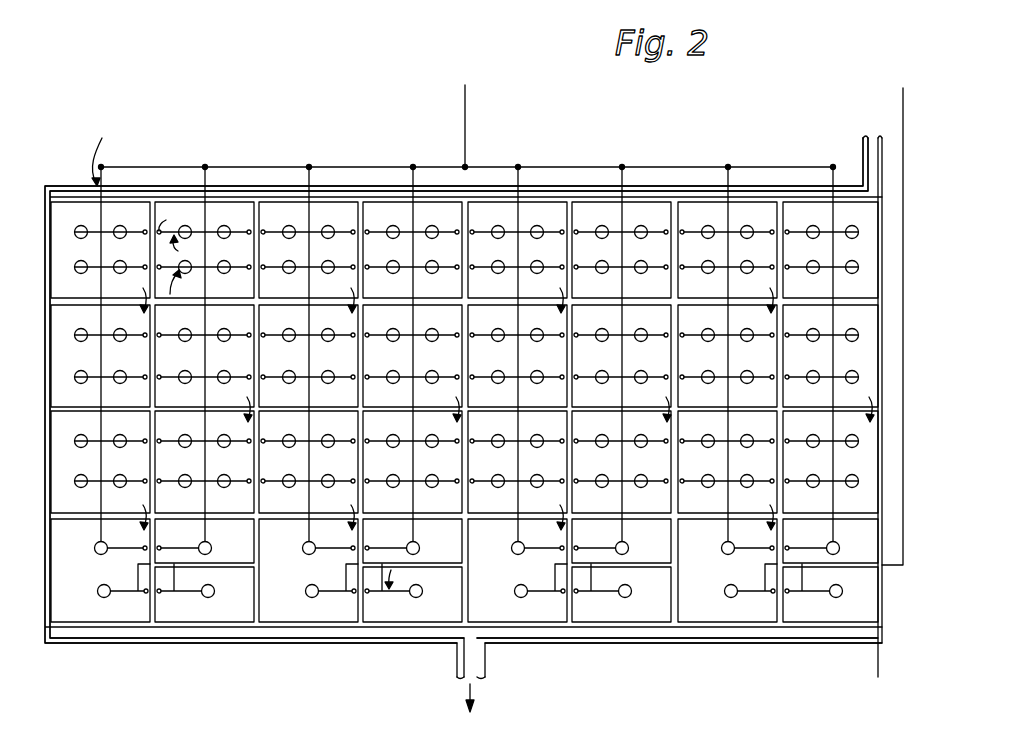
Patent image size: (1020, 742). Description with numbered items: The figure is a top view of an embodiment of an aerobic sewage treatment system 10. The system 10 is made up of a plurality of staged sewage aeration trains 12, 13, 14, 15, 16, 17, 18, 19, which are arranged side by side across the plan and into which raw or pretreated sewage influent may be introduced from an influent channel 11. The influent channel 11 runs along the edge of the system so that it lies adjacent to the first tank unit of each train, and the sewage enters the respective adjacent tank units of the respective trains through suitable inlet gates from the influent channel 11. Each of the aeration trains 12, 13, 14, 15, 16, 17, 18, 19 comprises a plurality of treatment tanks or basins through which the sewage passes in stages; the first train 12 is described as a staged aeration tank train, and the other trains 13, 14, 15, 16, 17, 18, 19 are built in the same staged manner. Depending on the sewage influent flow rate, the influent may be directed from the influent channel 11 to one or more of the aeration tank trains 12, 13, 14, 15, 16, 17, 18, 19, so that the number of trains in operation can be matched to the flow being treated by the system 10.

The sewage treatment system 10 is at (115, 90).
The influent channel 11 is at (177, 193).
The staged sewage aeration train 12 is at (67, 213).
The staged sewage aeration train 13 is at (247, 208).
The staged sewage aeration train 14 is at (289, 210).
The staged sewage aeration train 15 is at (392, 210).
The staged sewage aeration train 16 is at (497, 210).
The staged sewage aeration train 17 is at (601, 210).
The staged sewage aeration train 18 is at (696, 210).
The staged sewage aeration train 19 is at (805, 205).